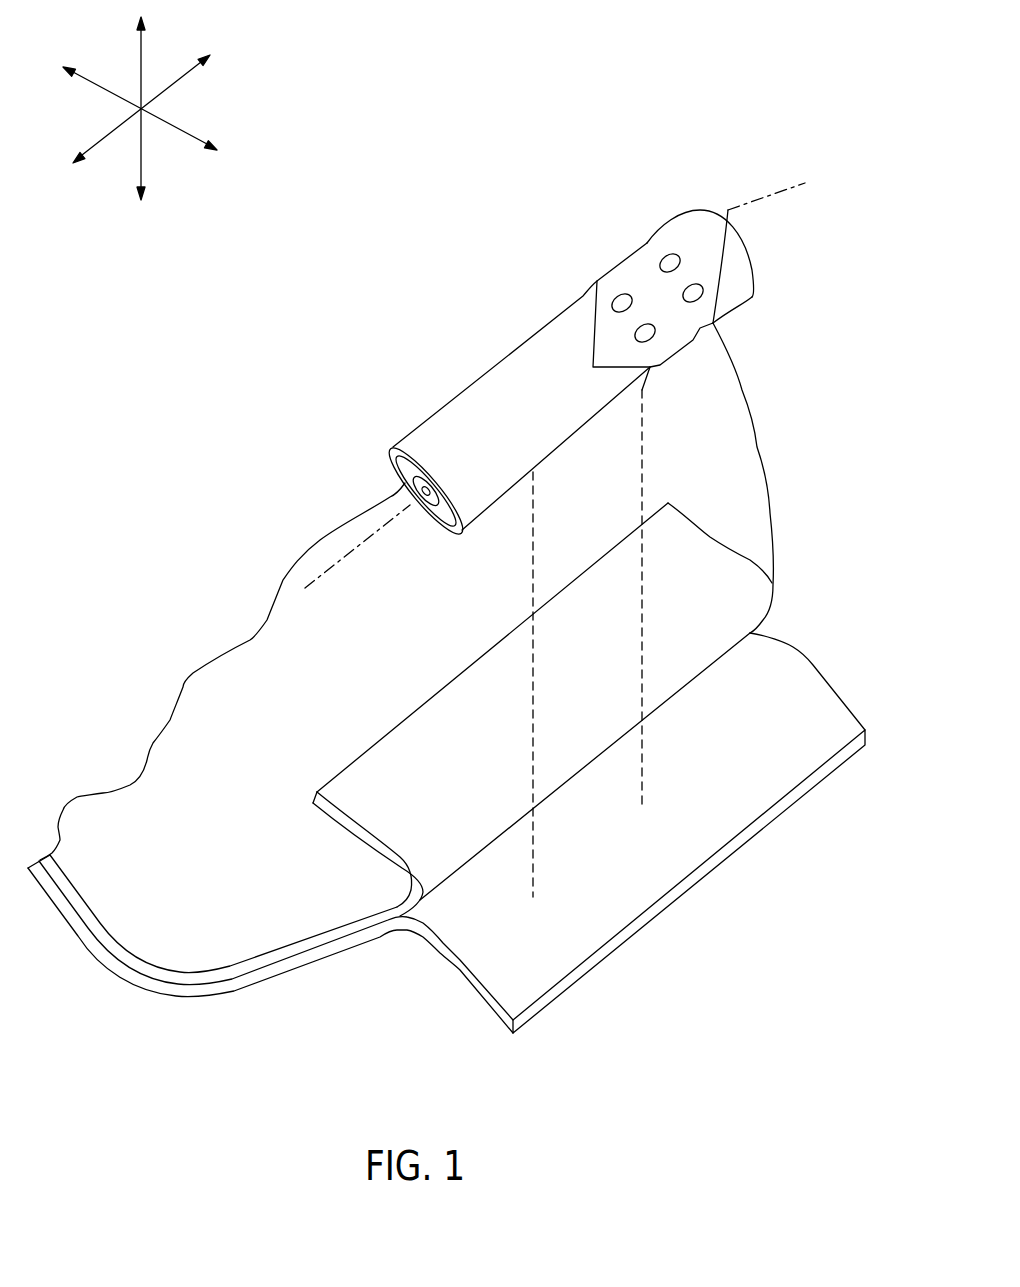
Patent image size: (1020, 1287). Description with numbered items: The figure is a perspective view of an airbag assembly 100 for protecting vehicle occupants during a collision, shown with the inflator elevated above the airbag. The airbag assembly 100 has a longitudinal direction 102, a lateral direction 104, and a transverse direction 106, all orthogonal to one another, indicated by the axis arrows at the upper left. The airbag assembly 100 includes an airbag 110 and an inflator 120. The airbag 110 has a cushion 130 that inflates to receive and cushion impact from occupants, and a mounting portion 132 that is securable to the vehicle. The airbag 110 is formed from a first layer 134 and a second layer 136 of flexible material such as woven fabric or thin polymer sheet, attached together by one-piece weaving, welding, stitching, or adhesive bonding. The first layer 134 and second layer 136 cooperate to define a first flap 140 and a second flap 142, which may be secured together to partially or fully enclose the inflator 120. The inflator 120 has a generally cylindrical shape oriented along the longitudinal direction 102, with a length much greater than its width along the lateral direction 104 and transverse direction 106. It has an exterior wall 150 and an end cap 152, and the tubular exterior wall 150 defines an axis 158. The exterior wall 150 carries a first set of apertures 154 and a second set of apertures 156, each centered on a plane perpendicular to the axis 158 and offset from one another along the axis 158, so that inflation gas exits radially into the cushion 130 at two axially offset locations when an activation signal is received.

The airbag assembly 100 is at (703, 120).
The longitudinal direction 102 is at (177, 73).
The lateral direction 104 is at (190, 130).
The transverse direction 106 is at (142, 173).
The airbag 110 is at (805, 440).
The inflator 120 is at (483, 310).
The cushion 130 is at (747, 350).
The mounting portion 132 is at (820, 663).
The first layer 134 is at (313, 962).
The second layer 136 is at (217, 977).
The first flap 140 is at (593, 960).
The second flap 142 is at (335, 818).
The exterior wall 150 is at (428, 437).
The end cap 152 is at (433, 515).
The first set of apertures 154 is at (640, 338).
The second set of apertures 156 is at (694, 285).
The axis 158 is at (335, 562).